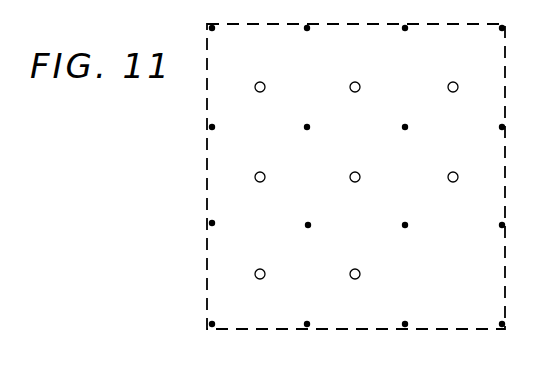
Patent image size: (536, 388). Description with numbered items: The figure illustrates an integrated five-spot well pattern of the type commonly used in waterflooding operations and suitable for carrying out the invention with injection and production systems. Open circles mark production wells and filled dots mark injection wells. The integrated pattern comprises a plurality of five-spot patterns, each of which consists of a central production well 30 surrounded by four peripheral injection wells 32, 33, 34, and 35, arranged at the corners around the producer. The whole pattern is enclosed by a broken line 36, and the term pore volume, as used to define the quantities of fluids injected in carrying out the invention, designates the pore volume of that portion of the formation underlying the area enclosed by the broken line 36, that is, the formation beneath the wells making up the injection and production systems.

The central production well 30 is at (366, 164).
The peripheral injection well 32 is at (320, 115).
The peripheral injection well 33 is at (417, 115).
The peripheral injection well 34 is at (417, 212).
The peripheral injection well 35 is at (320, 212).
The broken line 36 is at (207, 178).